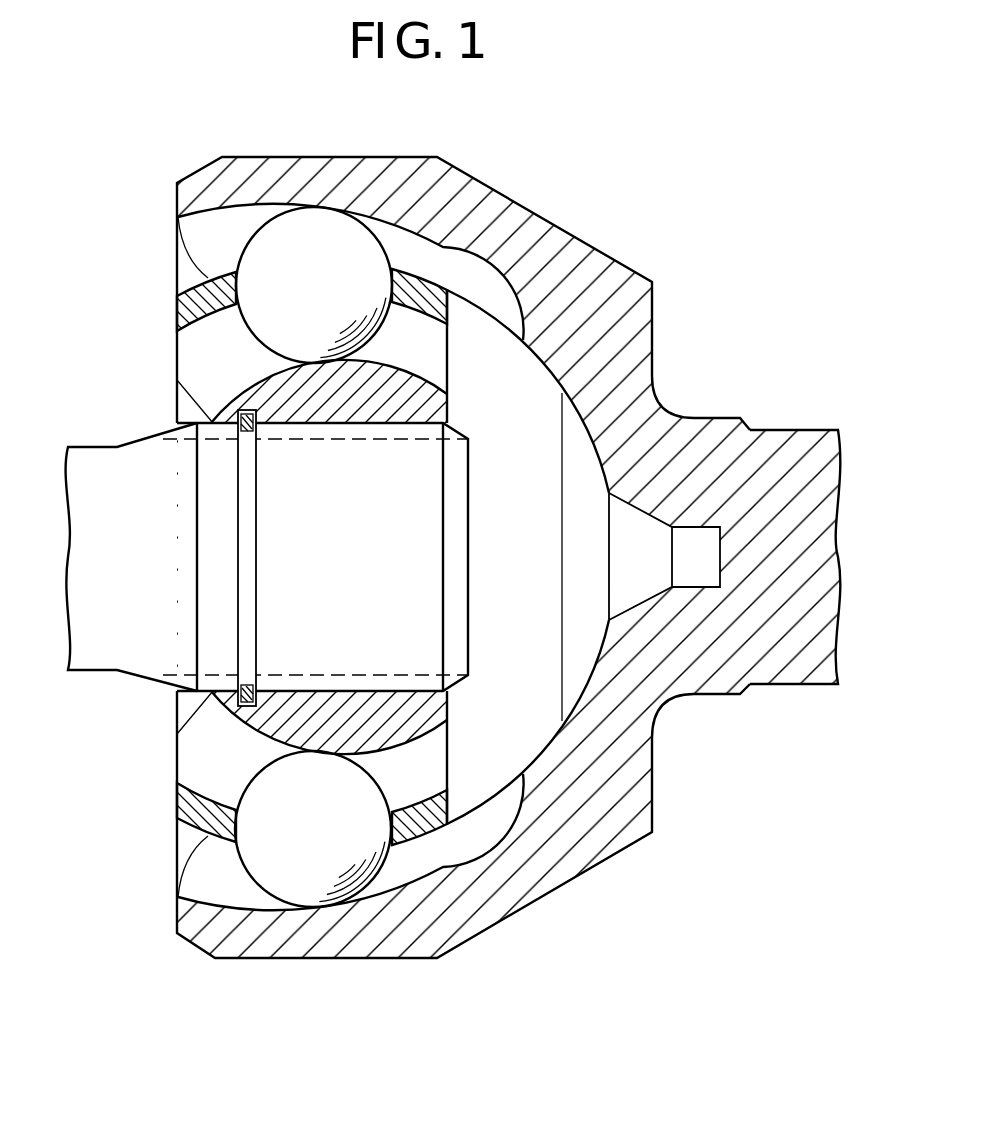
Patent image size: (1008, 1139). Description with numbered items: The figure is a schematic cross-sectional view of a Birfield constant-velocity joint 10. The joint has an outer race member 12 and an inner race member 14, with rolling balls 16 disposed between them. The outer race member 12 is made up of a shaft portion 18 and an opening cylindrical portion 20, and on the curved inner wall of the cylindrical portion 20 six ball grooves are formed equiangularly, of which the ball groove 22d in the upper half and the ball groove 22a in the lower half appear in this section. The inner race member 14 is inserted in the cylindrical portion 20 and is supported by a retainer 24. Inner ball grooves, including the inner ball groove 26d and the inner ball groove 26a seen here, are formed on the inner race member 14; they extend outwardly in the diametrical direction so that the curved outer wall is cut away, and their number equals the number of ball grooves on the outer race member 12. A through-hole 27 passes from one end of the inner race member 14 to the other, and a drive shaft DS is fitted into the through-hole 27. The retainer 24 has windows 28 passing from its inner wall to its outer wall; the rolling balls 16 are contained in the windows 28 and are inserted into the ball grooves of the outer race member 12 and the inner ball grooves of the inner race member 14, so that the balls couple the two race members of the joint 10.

The constant-velocity joint 10 is at (667, 88).
The outer race member 12 is at (207, 149).
The inner race member 14 is at (263, 720).
The rolling balls 16 is at (340, 232).
The shaft portion 18 is at (788, 453).
The opening cylindrical portion 20 is at (558, 273).
The ball groove 22d is at (420, 228).
The ball groove 22a is at (245, 903).
The retainer 24 is at (173, 813).
The inner ball groove 26d is at (433, 360).
The inner ball groove 26a is at (427, 768).
The through-hole 27 is at (250, 418).
The windows 28 is at (240, 287).
The drive shaft DS is at (99, 457).